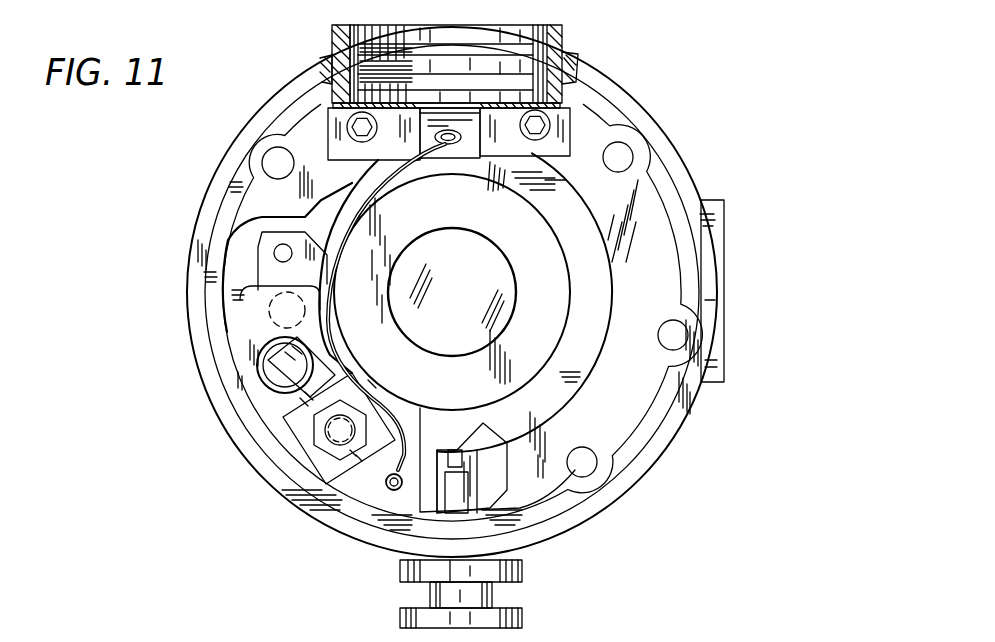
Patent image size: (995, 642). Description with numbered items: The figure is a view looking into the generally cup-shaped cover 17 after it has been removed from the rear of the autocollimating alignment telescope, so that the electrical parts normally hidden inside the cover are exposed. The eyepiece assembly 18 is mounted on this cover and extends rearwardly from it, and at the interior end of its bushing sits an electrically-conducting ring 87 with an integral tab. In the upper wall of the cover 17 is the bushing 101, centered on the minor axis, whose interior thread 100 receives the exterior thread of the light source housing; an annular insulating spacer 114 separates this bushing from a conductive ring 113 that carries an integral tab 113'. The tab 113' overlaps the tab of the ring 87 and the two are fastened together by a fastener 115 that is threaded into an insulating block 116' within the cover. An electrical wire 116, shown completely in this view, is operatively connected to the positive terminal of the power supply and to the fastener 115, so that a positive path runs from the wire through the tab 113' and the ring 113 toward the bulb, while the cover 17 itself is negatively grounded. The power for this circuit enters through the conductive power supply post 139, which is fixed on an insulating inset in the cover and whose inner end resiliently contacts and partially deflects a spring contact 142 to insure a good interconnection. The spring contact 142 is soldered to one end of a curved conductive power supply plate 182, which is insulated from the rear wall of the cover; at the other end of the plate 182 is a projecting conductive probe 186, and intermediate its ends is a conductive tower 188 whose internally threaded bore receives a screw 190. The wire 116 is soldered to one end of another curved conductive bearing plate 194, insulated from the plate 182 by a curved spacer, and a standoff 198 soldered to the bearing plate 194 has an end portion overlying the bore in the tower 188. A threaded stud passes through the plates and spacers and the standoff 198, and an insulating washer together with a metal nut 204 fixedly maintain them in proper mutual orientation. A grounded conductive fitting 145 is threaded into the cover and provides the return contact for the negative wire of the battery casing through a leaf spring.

The cover 17 is at (662, 142).
The eyepiece assembly 18 is at (463, 288).
The electrically-conducting ring 87 is at (550, 307).
The interior thread 100 is at (542, 62).
The bushing 101 is at (560, 38).
The conductive ring 113 is at (374, 151).
The tab 113' is at (492, 159).
The annular insulating spacer 114 is at (343, 100).
The fastener 115 is at (447, 146).
The electrical wire 116 is at (386, 307).
The insulating block 116' is at (574, 111).
The power supply post 139 is at (458, 465).
The spring contact 142 is at (458, 448).
The conductive fitting 145 is at (490, 595).
The power supply plate 182 is at (443, 432).
The conductive probe 186 is at (275, 255).
The conductive tower 188 is at (265, 367).
The screw 190 is at (307, 390).
The bearing plate 194 is at (402, 500).
The standoff 198 is at (303, 397).
The metal nut 204 is at (292, 490).